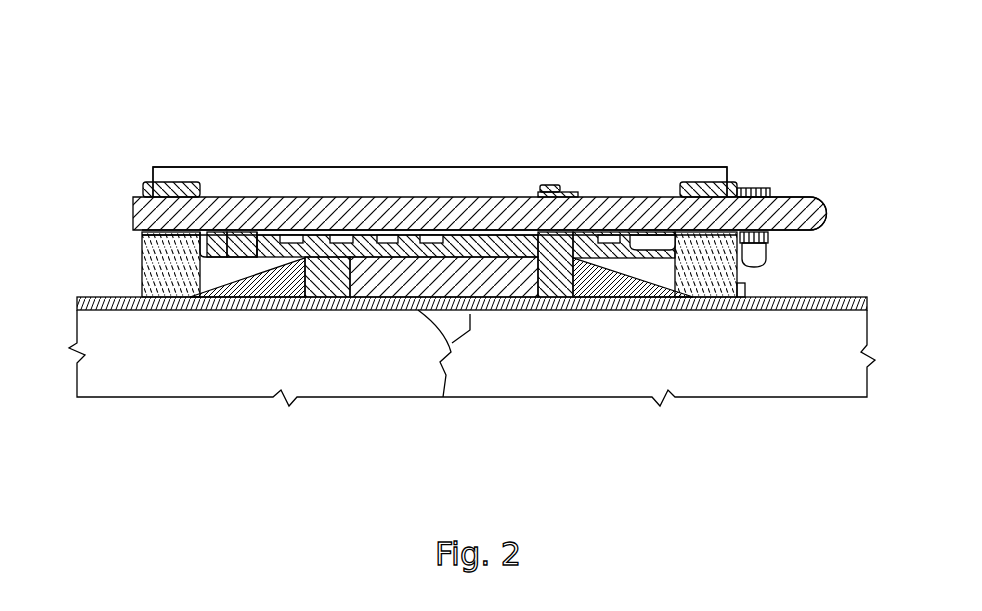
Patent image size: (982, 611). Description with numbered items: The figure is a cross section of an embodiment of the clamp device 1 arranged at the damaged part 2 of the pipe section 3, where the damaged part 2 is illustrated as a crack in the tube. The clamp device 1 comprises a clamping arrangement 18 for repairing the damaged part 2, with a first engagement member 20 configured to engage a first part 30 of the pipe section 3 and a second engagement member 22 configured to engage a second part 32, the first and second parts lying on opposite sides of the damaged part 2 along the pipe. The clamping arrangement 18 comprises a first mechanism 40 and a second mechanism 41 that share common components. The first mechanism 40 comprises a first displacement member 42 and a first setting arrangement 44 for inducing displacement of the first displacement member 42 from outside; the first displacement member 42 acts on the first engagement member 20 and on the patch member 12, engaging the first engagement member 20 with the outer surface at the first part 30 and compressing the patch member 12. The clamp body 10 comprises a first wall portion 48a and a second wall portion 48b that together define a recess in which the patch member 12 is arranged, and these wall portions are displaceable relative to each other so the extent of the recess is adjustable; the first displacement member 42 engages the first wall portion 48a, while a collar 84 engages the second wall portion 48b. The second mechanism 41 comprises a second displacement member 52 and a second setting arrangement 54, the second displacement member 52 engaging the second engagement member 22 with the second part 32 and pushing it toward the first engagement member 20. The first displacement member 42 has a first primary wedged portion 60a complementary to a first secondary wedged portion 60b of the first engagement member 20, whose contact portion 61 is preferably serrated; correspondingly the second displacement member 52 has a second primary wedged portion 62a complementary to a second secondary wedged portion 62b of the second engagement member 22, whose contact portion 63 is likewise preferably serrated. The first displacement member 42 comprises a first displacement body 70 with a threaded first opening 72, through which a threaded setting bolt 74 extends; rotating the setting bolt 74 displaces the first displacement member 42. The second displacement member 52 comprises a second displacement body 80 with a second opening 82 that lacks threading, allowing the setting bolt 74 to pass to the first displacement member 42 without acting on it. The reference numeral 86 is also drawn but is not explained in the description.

The clamp device 1 is at (187, 67).
The damaged part 2 is at (442, 440).
The pipe section 3 is at (77, 377).
The clamp body 10 is at (523, 255).
The patch member 12 is at (372, 298).
The clamping arrangement 18 is at (153, 102).
The first engagement member 20 is at (257, 298).
The second engagement member 22 is at (580, 300).
The first part 30 is at (173, 440).
The second part 32 is at (737, 440).
The first mechanism 40 is at (120, 138).
The second mechanism 41 is at (738, 102).
The first displacement member 42 is at (140, 297).
The first setting arrangement 44 is at (375, 135).
The first wall portion 48a is at (313, 300).
The second wall portion 48b is at (483, 240).
The second displacement member 52 is at (715, 300).
The second setting arrangement 54 is at (375, 135).
The first primary wedged portion 60a is at (220, 257).
The first secondary wedged portion 60b is at (258, 258).
The contact portion 61 is at (223, 298).
The second primary wedged portion 62a is at (645, 240).
The second secondary wedged portion 62b is at (603, 235).
The contact portion 63 is at (633, 300).
The first displacement body 70 is at (136, 342).
The first opening 72 is at (148, 212).
The setting bolt 74 is at (427, 197).
The second displacement body 80 is at (720, 250).
The second opening 82 is at (717, 208).
The collar 84 is at (572, 185).
The screw 86 is at (760, 186).